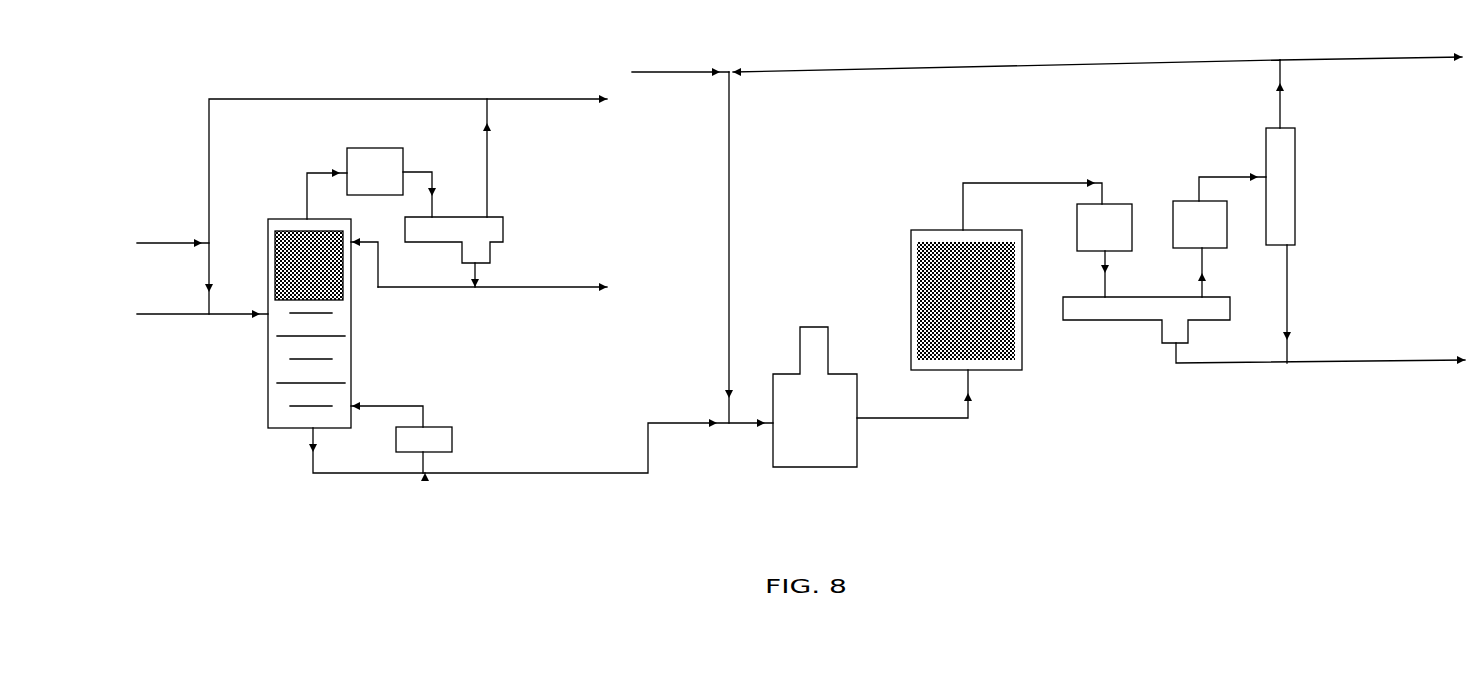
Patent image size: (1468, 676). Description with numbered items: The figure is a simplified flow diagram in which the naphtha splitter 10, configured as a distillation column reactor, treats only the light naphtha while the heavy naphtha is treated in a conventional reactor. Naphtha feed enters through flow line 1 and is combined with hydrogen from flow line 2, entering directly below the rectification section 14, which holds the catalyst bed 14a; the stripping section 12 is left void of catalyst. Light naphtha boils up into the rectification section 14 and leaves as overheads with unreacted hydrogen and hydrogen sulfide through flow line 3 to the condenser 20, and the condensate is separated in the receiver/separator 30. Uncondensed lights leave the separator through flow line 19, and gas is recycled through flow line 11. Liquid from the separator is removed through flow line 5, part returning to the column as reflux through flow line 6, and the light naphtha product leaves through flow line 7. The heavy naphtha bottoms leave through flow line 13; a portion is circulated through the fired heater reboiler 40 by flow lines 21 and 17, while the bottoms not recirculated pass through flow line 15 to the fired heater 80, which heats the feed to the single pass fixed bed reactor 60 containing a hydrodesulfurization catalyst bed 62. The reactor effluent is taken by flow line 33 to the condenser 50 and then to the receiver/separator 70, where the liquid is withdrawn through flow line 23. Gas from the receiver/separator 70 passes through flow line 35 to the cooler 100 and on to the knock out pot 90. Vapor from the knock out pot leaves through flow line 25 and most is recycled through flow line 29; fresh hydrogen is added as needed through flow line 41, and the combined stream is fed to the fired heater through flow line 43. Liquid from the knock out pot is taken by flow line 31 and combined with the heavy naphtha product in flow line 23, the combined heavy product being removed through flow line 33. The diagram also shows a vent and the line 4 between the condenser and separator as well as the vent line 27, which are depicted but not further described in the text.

The flow line 1 is at (172, 313).
The flow line 2 is at (175, 243).
The flow line 3 is at (307, 170).
The line from heat exchanger to separator 4 is at (436, 180).
The flow line 5 is at (468, 282).
The flow line 6 is at (420, 290).
The flow line 7 is at (574, 272).
The naphtha splitter 10 is at (275, 225).
The flow line 11 is at (396, 99).
The stripping section 12 is at (345, 359).
The flow line 13 is at (390, 478).
The rectification section 14 is at (343, 294).
The catalyst bed 14a is at (293, 262).
The flow line 15 is at (535, 476).
The flow line 17 is at (895, 418).
The flow line 19 is at (523, 158).
The condenser 20 is at (375, 171).
The flow line 21 is at (430, 462).
The flow line 23 is at (1235, 370).
The flow line 25 is at (1287, 84).
The vent gas line 27 is at (1345, 58).
The flow line 29 is at (1068, 66).
The receiver/separator 30 is at (477, 234).
The flow line 31 is at (1290, 290).
The flow line 33 is at (987, 183).
The flow line 35 is at (1221, 176).
The fired heater reboiler 40 is at (445, 440).
The flow line 41 is at (690, 72).
The flow line 43 is at (720, 158).
The condenser 50 is at (1104, 250).
The single pass fixed bed reactor 60 is at (913, 243).
The hydrodesulfurization catalyst bed 62 is at (940, 286).
The receiver/separator 70 is at (1148, 320).
The fired heater 80 is at (815, 397).
The knock out pot 90 is at (1290, 200).
The cooler 100 is at (1200, 249).